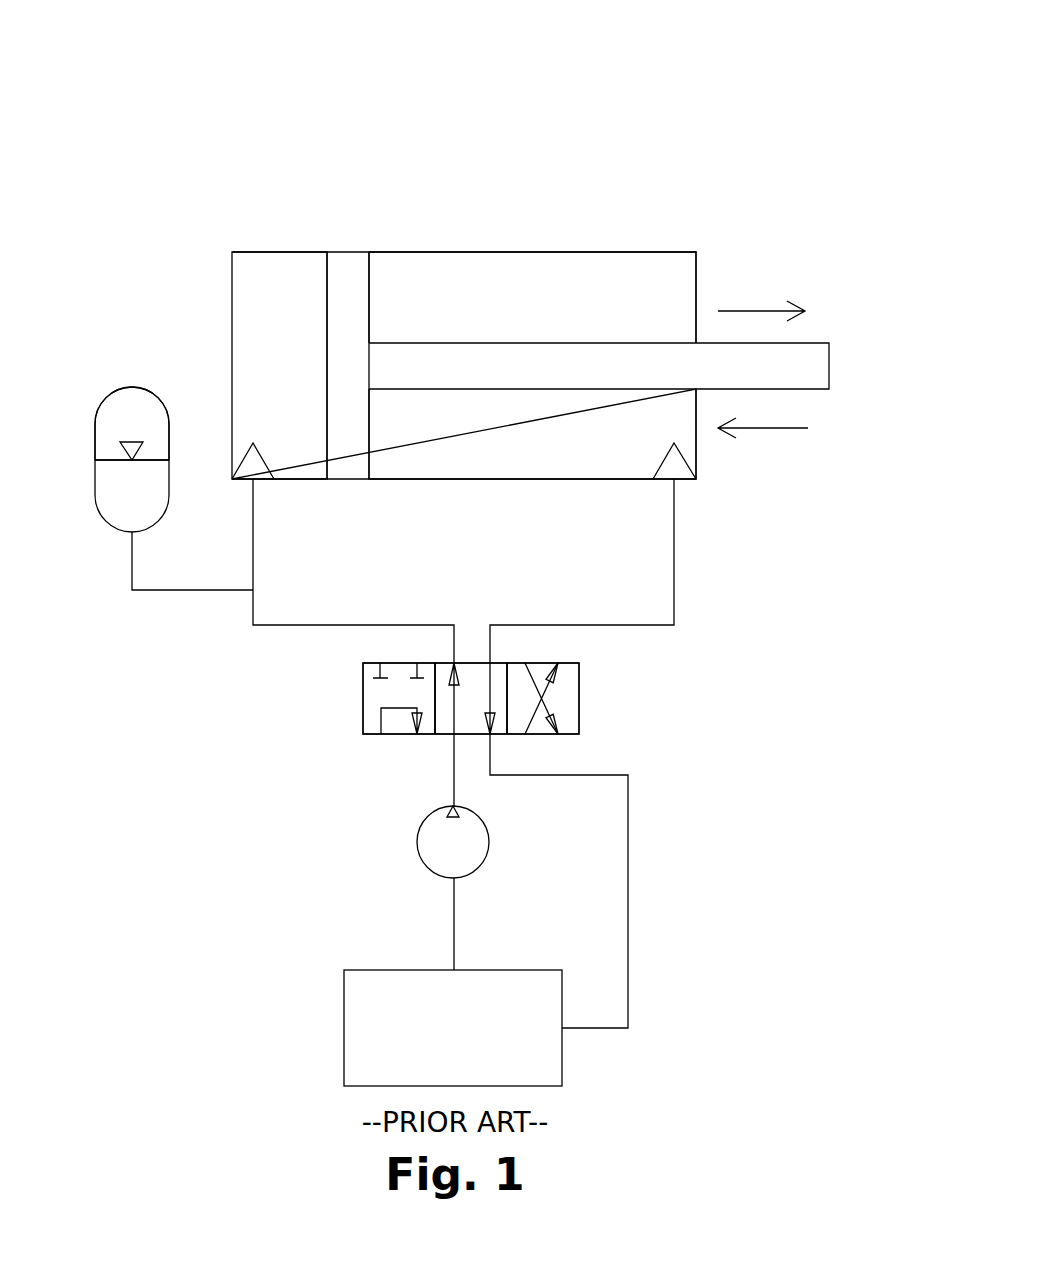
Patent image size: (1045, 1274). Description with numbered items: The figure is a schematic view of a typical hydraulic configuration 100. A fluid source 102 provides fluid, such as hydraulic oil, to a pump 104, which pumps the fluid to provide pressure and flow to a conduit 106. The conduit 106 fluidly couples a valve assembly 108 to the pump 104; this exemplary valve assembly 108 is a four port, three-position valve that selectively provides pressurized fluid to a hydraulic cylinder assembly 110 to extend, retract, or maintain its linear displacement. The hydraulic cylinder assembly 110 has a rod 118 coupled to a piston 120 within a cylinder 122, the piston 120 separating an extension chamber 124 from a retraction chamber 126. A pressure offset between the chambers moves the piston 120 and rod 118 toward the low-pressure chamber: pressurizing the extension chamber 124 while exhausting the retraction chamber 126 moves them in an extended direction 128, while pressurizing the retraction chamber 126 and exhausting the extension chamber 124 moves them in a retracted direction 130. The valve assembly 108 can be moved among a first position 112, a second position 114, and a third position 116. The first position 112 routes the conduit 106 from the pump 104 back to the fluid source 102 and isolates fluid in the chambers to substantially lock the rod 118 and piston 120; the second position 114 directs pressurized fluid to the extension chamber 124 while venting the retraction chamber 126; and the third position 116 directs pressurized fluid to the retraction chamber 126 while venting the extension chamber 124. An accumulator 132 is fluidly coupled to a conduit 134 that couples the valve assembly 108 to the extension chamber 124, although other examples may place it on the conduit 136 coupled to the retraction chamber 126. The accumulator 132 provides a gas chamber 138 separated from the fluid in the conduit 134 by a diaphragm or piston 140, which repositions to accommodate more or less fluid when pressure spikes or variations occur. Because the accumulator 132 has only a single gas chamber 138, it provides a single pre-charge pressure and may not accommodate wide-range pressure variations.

The hydraulic configuration 100 is at (708, 124).
The fluid source 102 is at (344, 1027).
The pump 104 is at (417, 842).
The conduit 106 is at (452, 770).
The valve assembly 108 is at (483, 664).
The hydraulic cylinder assembly 110 is at (540, 294).
The first position 112 is at (372, 695).
The second position 114 is at (477, 663).
The third position 116 is at (540, 668).
The rod 118 is at (830, 365).
The piston 120 is at (348, 275).
The cylinder 122 is at (517, 251).
The extension chamber 124 is at (255, 282).
The retraction chamber 126 is at (609, 283).
The extended direction 128 is at (751, 300).
The retracted direction 130 is at (770, 428).
The accumulator 132 is at (141, 444).
The conduit 134 is at (353, 625).
The conduit 136 is at (590, 625).
The gas chamber 138 is at (135, 409).
The diaphragm or piston 140 is at (108, 458).